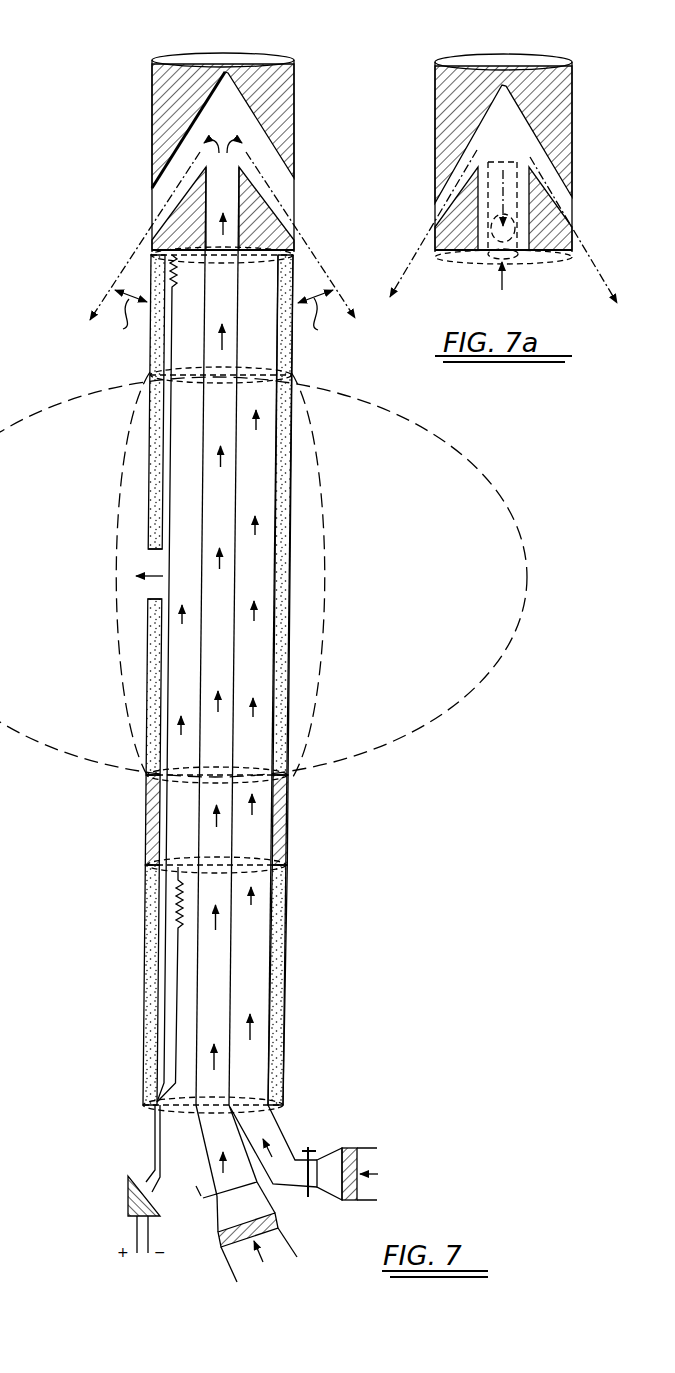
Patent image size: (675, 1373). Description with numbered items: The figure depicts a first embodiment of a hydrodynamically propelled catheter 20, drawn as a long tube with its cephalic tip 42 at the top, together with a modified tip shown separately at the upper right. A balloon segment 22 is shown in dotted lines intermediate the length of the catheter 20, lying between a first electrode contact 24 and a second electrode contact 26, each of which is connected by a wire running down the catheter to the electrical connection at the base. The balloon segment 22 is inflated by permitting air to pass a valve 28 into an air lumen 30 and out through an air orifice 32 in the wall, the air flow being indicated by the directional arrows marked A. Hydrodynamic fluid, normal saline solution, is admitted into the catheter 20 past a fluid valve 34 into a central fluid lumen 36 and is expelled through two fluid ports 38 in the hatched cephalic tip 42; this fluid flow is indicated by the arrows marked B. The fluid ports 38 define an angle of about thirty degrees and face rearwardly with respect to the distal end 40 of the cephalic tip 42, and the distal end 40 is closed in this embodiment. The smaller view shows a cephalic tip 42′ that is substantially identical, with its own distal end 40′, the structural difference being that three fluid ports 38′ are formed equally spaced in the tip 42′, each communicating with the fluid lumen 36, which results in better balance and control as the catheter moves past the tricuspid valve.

In FIG. 7, the hydrodynamically propelled catheter 20 is at (120, 239).
In FIG. 7, the balloon segment 22 is at (327, 497).
In FIG. 7, the first electrode contact 24 is at (172, 258).
In FIG. 7, the second electrode contact 26 is at (178, 869).
In FIG. 7, the valve 28 is at (309, 1147).
In FIG. 7, the air lumen 30 is at (264, 989).
In FIG. 7, the air orifice 32 is at (148, 593).
In FIG. 7, the fluid valve 34 is at (199, 1197).
In FIG. 7, the fluid lumen 36 is at (200, 953).
In FIG. 7, the fluid ports 38 is at (152, 201).
In FIG. 7, the distal end 40 is at (187, 53).
In FIG. 7, the cephalic tip 42 is at (153, 97).
In FIG. 7a, the fluid ports 38′ is at (513, 183).
In FIG. 7a, the distal end 40′ is at (452, 60).
In FIG. 7a, the cephalic tip 42′ is at (437, 88).